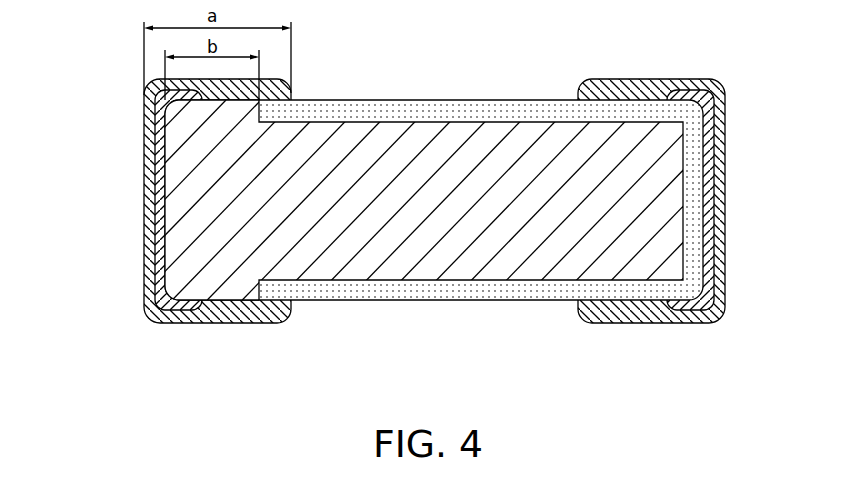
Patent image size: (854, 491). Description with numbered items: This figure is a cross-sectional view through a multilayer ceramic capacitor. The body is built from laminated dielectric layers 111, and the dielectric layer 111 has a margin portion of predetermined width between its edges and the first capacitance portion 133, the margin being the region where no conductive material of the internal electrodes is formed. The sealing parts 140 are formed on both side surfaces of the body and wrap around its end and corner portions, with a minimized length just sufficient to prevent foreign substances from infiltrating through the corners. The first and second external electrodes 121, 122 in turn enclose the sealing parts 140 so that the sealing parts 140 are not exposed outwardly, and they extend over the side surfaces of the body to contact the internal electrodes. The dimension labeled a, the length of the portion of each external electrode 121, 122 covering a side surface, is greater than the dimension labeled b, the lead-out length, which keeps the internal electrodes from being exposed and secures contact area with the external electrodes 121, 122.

The dielectric layer 111 is at (480, 292).
The first external electrode 121 is at (149, 198).
The second external electrode 122 is at (720, 198).
The first capacitance portion 133 is at (385, 235).
The sealing part 140 is at (160, 161).